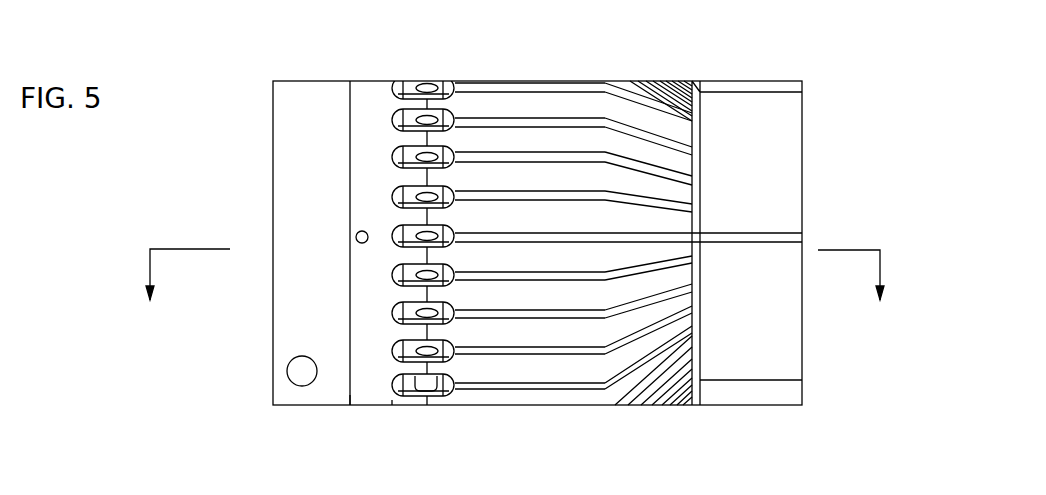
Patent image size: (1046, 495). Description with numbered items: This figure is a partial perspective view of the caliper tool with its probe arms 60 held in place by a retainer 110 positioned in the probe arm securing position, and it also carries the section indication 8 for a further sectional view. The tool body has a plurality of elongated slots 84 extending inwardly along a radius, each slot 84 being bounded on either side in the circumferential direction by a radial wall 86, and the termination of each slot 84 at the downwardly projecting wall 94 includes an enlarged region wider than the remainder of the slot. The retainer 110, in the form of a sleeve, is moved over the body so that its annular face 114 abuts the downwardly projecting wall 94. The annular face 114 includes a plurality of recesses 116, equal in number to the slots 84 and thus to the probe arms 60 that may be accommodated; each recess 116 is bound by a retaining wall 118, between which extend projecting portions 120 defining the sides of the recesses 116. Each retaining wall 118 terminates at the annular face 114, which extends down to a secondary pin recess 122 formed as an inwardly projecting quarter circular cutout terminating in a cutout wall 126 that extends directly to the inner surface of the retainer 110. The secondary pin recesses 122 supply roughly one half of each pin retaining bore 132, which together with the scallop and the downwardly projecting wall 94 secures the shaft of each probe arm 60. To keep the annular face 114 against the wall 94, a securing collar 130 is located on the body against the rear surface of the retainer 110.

The section line 8- 8 is at (510, 276).
The probe arm 60 is at (788, 237).
The elongated slot 84 is at (507, 117).
The radial wall 86 is at (672, 204).
The downwardly projecting wall 94 is at (433, 390).
The retainer 110 is at (373, 390).
The annular face 114 is at (432, 403).
The recess 116 is at (393, 122).
The retaining wall 118 is at (400, 249).
The projecting portion 120 is at (400, 292).
The secondary pin recess 122 is at (417, 118).
The cutout wall 126 is at (425, 84).
The securing collar 130 is at (287, 338).
The pin retaining bore 132 is at (393, 120).